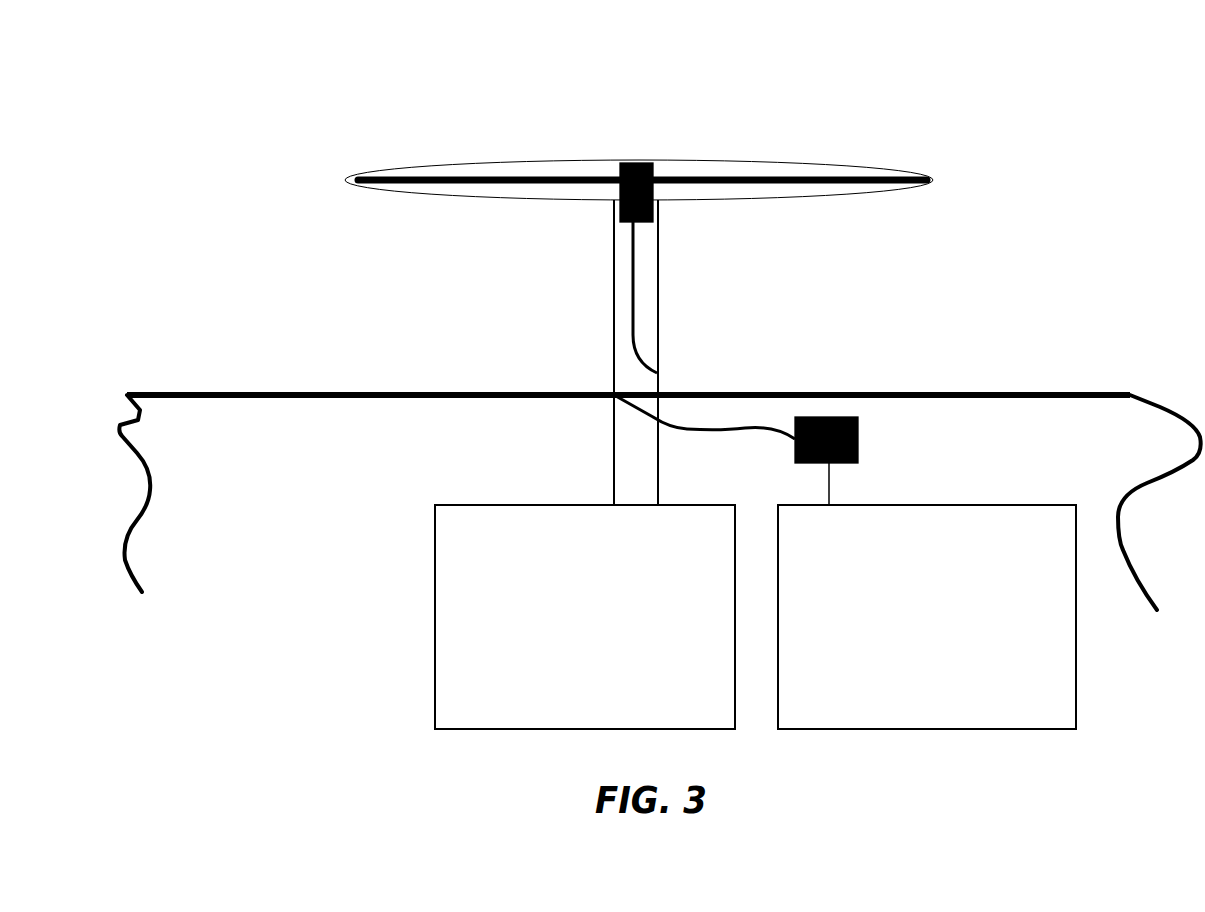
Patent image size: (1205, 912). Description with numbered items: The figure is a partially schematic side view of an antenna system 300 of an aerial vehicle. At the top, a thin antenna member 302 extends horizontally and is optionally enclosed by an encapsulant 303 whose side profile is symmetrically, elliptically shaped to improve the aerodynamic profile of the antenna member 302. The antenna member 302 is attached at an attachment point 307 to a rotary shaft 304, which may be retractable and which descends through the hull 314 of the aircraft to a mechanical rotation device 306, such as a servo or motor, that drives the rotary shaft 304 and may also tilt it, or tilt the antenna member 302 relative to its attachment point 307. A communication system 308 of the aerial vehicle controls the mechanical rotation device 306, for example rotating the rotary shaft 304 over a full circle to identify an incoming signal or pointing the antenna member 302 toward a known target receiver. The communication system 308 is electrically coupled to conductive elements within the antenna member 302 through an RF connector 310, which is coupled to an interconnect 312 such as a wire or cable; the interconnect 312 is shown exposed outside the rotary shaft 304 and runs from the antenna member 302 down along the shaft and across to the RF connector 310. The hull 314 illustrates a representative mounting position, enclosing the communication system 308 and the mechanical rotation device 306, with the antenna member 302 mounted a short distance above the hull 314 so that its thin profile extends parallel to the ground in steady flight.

The antenna system 300 is at (182, 56).
The antenna member 302 is at (527, 175).
The encapsulant 303 is at (598, 158).
The rotary shaft 304 is at (613, 362).
The mechanical rotation device 306 is at (558, 670).
The attachment point 307 is at (658, 198).
The communication system 308 is at (902, 650).
The RF connector 310 is at (827, 415).
The interconnect 312 is at (632, 310).
The hull 314 is at (195, 393).